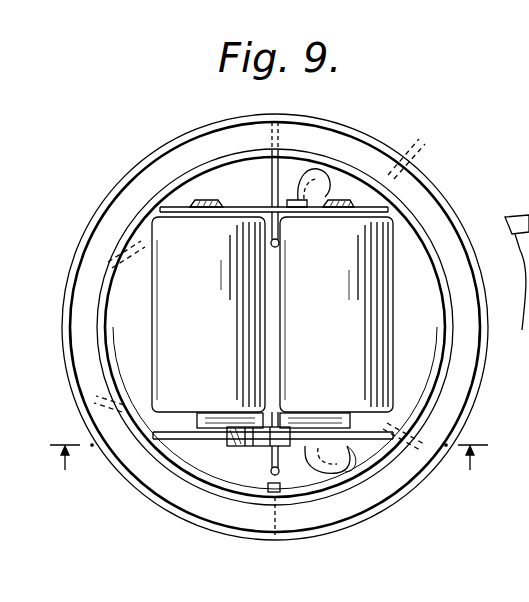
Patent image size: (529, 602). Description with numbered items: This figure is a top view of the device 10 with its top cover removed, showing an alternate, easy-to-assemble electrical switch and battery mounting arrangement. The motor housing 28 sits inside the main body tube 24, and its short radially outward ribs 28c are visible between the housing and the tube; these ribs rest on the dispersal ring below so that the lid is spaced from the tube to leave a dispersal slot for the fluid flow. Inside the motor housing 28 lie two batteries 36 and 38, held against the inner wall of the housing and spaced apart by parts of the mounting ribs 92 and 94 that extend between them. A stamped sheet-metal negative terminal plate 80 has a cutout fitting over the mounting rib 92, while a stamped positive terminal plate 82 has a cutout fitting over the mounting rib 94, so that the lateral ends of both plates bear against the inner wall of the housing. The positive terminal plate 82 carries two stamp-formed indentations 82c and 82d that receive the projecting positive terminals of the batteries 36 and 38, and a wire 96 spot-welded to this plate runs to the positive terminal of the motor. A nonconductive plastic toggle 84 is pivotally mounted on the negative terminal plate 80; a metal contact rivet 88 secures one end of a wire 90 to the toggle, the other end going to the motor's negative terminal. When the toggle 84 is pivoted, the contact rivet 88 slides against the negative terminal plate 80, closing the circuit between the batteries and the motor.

The device 10 is at (269, 475).
The main body tube 24 is at (152, 493).
The motor housing 28 is at (437, 329).
The ribs 28c is at (92, 405).
The battery 36 is at (345, 317).
The battery 38 is at (222, 313).
The negative terminal plate 80 is at (400, 497).
The positive terminal plate 82 is at (380, 207).
The indentation 82c is at (352, 205).
The indentation 82d is at (207, 203).
The toggle 84 is at (235, 446).
The contact rivet 88 is at (313, 447).
The wire 90 is at (340, 470).
The mounting rib 92 is at (262, 458).
The mounting rib 94 is at (268, 180).
The wire 96 is at (326, 190).